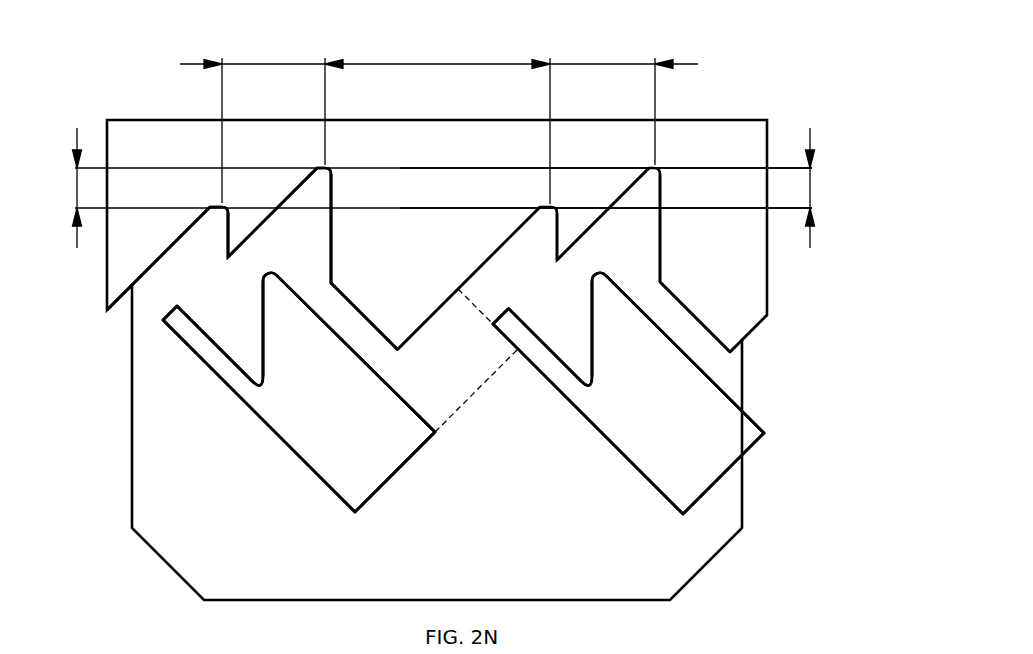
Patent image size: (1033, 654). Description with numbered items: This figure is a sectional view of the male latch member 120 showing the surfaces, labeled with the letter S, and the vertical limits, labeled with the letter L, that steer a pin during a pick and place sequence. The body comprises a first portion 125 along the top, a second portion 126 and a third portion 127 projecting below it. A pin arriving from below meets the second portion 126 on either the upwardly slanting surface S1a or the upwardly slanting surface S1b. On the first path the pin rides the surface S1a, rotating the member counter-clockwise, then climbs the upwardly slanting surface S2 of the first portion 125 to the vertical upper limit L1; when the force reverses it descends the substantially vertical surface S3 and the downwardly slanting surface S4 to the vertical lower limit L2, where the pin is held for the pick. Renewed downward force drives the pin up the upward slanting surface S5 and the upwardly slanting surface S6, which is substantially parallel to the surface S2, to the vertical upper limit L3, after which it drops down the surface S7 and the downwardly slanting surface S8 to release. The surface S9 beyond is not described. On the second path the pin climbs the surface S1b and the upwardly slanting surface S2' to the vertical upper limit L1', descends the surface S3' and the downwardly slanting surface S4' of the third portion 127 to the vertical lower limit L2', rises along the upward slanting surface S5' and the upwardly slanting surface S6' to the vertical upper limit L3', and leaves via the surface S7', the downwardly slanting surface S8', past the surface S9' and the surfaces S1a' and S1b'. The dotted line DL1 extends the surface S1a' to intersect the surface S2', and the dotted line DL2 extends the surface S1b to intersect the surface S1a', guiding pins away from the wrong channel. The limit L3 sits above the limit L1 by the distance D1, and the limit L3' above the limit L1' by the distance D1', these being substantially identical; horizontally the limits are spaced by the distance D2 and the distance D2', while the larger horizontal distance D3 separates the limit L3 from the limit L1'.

The male latch member 120 is at (103, 80).
The first portion 125 is at (160, 236).
The second portion 126 is at (310, 417).
The third portion 127 is at (706, 455).
The vertical upper limit L1 is at (421, 149).
The vertical upper limit L3 is at (443, 129).
The vertical upper limit L1' is at (606, 149).
The vertical upper limit L3' is at (606, 129).
The vertical lower limit L2 is at (149, 396).
The vertical lower limit L2' is at (517, 403).
The distance D1 is at (67, 188).
The distance D1' is at (800, 188).
The distance D2 is at (252, 121).
The horizontal distance D3 is at (437, 121).
The distance D2' is at (624, 102).
The dotted line DL1 is at (483, 318).
The dotted line DL2 is at (462, 407).
The upwardly slanting surface S1a is at (259, 433).
The upwardly slanting surface S1b is at (438, 502).
The upwardly slanting surface S1a' is at (588, 448).
The upwardly slanting surface S1b' is at (753, 503).
The upwardly slanting surface S2 is at (444, 303).
The surface S3 is at (143, 294).
The downwardly slanting surface S4 is at (166, 364).
The upward slanting surface S5 is at (220, 328).
The upwardly slanting surface S6 is at (232, 191).
The surface S7 is at (367, 204).
The downwardly slanting surface S8 is at (356, 361).
The ninth surface S9 is at (380, 281).
The upwardly slanting surface S2' is at (466, 259).
The surface S3' is at (472, 250).
The downwardly slanting surface S4' is at (502, 357).
The upward slanting surface S5' is at (542, 327).
The upwardly slanting surface S6' is at (582, 200).
The surface S7' is at (739, 184).
The downwardly slanting surface S8' is at (685, 354).
The ninth surface (second tooth) S9' is at (753, 296).